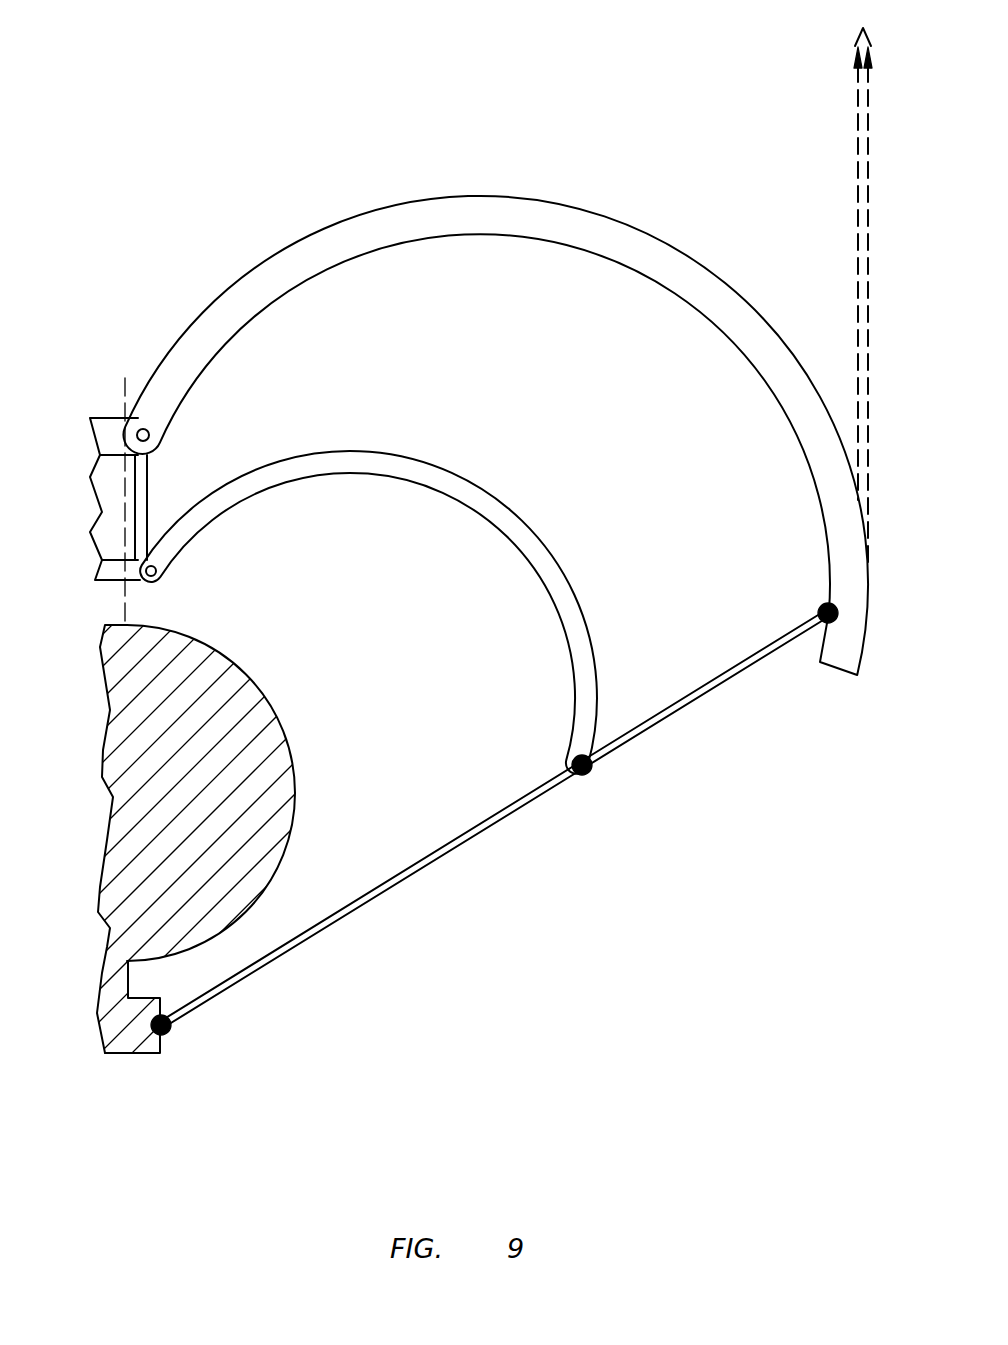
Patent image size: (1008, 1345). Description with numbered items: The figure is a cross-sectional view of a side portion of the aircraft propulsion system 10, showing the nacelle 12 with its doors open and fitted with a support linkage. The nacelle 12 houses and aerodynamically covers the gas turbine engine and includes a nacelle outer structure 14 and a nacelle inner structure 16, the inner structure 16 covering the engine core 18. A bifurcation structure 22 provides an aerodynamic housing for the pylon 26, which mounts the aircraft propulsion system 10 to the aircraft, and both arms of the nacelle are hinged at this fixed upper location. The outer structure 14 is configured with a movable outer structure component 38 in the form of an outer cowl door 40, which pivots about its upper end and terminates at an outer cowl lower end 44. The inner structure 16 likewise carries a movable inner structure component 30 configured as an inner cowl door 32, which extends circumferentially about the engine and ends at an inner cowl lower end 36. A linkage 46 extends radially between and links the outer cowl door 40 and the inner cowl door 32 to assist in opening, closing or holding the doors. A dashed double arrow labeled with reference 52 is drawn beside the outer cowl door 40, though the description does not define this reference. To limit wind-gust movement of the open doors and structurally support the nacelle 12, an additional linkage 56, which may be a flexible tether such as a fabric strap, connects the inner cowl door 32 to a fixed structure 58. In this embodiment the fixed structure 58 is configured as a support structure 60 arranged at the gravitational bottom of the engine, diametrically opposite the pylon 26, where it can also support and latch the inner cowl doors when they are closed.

The aircraft propulsion system 10 is at (200, 118).
The nacelle 12 is at (160, 399).
The nacelle outer structure 14 is at (495, 424).
The nacelle inner structure 16 is at (368, 571).
The engine core 18 is at (314, 889).
The bifurcation structure 22 is at (155, 485).
The pylon 26 is at (141, 598).
The inner structure component 30 is at (368, 570).
The inner cowl door 32 is at (430, 458).
The inner cowl lower end 36 is at (575, 765).
The outer structure component 38 is at (495, 385).
The outer cowl door 40 is at (473, 195).
The outer cowl lower end 44 is at (835, 678).
The linkage 46 is at (678, 727).
The direction of travel 52 is at (857, 195).
The linkage 56 is at (377, 908).
The fixed structure 58 is at (104, 1060).
The support structure 60 is at (105, 1060).